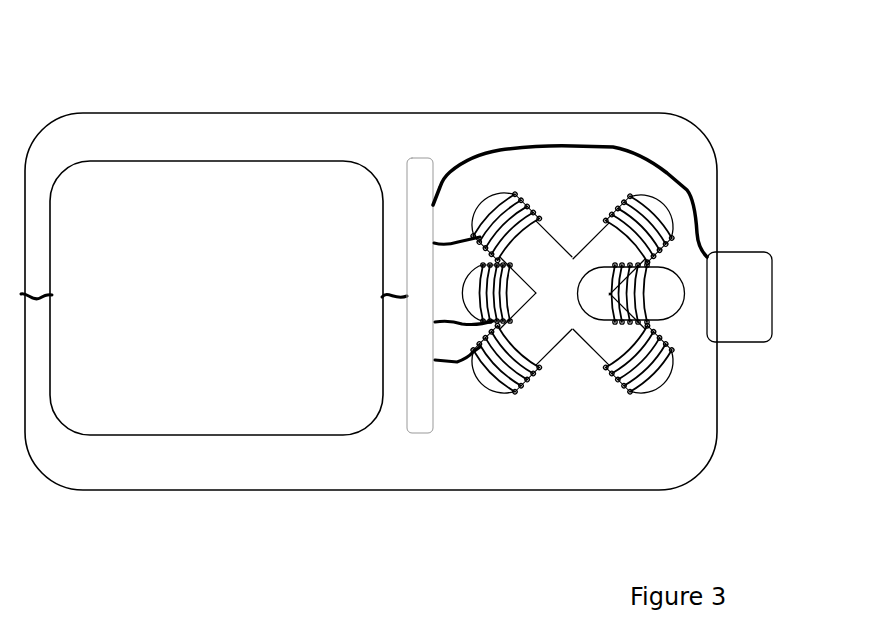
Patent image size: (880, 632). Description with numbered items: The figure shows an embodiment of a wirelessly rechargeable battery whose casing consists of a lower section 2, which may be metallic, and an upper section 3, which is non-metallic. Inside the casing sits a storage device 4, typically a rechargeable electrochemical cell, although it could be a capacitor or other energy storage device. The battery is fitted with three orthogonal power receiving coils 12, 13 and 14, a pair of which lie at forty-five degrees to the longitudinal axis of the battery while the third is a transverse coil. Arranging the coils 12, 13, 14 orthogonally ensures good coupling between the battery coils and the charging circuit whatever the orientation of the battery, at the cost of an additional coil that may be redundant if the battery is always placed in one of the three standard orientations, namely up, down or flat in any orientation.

The lower section 2 is at (155, 112).
The upper section 3 is at (625, 113).
The storage device 4 is at (260, 223).
The coil 12 is at (643, 322).
The coil 13 is at (667, 355).
The coil 14 is at (533, 380).